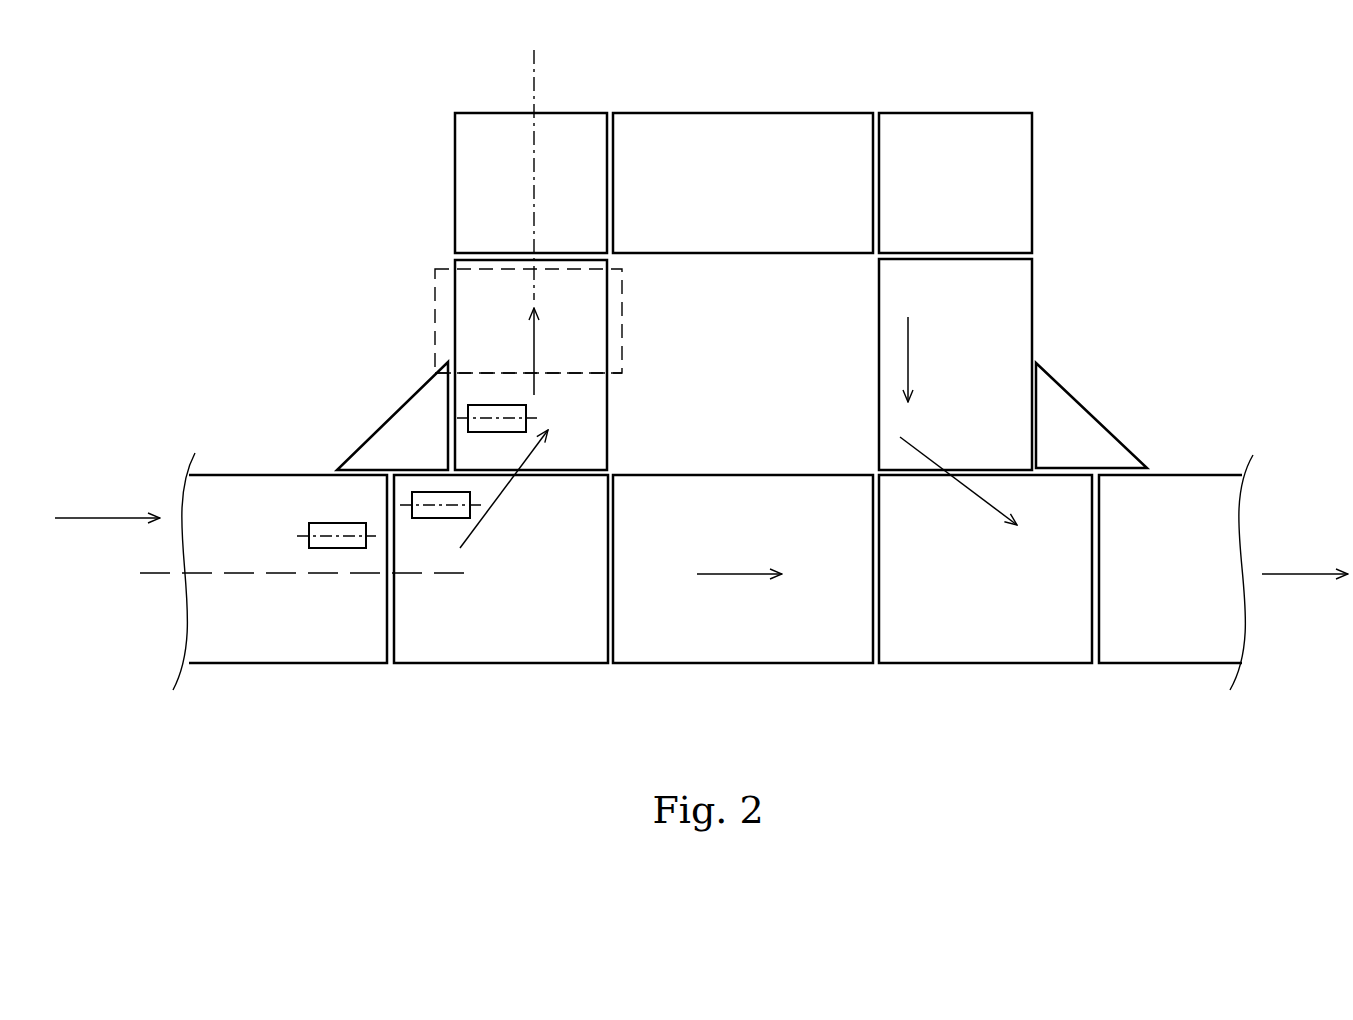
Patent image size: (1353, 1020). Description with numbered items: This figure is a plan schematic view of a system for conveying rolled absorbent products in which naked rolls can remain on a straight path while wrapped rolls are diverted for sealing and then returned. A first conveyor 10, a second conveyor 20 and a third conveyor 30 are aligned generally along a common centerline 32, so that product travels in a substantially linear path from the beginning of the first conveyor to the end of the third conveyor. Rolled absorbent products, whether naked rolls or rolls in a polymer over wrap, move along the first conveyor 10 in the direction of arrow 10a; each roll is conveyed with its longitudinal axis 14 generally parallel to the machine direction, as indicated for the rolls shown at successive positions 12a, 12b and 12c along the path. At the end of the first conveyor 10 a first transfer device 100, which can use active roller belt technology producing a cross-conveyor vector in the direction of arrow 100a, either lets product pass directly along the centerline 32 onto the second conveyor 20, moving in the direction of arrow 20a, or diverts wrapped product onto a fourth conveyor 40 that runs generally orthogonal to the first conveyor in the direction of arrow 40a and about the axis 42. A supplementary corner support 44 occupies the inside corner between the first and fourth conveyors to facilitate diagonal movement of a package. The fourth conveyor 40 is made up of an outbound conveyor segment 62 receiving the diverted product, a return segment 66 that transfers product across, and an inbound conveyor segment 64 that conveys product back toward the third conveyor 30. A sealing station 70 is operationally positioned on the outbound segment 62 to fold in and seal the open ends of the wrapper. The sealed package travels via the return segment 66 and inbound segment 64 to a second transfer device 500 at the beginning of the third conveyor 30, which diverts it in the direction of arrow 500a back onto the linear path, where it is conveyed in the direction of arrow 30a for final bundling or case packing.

The first conveyor 10 is at (275, 650).
The arrow indicating direction of conveyance on first conveyor 10a is at (91, 520).
The workpiece at first position 12a is at (325, 547).
The workpiece at second position 12b is at (417, 508).
The workpiece at third position 12c is at (515, 425).
The longitudinal axis 14 is at (302, 537).
The second conveyor 20 is at (743, 653).
The arrow indicating direction of conveyance on second conveyor 20a is at (732, 575).
The third conveyor 30 is at (1185, 650).
The arrow indicating direction of conveyance on third conveyor 30a is at (1299, 578).
The common centerline 32 is at (160, 575).
The fourth conveyor 40 is at (463, 310).
The arrow indicating direction of conveyance on fourth conveyor 40a is at (537, 352).
The axis of transfer device 42 is at (535, 73).
The corner support 44 is at (405, 430).
The outbound conveyor segment 62 is at (600, 305).
The inbound conveyor segment 64 is at (890, 352).
The return segment 66 is at (578, 128).
The sealing station 70 is at (620, 352).
The first transfer device 100 is at (488, 650).
The arrow indicating cross-conveyor divert direction 100a is at (497, 503).
The second transfer device 500 is at (982, 650).
The arrow indicating divert direction at second transfer device 500a is at (968, 493).